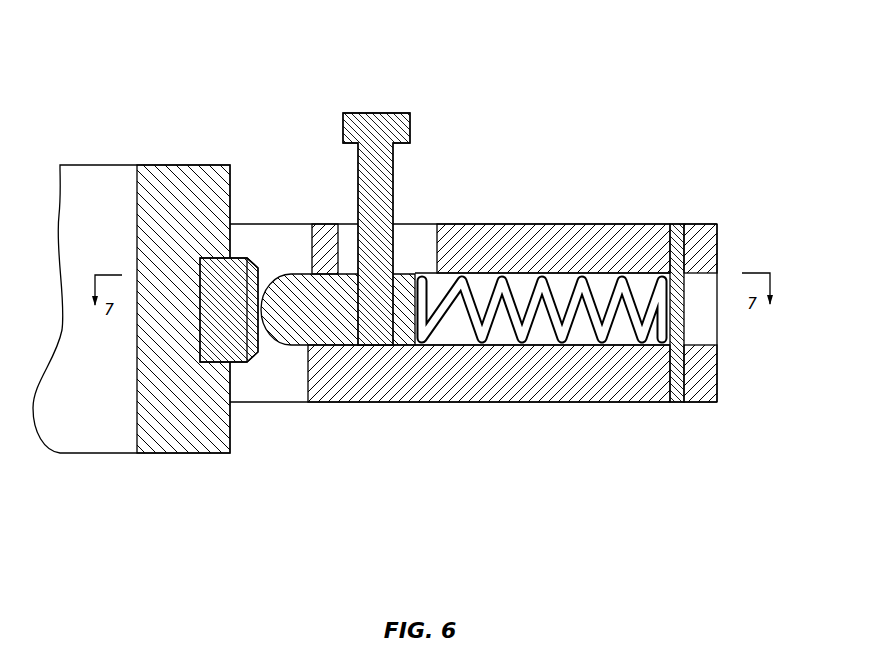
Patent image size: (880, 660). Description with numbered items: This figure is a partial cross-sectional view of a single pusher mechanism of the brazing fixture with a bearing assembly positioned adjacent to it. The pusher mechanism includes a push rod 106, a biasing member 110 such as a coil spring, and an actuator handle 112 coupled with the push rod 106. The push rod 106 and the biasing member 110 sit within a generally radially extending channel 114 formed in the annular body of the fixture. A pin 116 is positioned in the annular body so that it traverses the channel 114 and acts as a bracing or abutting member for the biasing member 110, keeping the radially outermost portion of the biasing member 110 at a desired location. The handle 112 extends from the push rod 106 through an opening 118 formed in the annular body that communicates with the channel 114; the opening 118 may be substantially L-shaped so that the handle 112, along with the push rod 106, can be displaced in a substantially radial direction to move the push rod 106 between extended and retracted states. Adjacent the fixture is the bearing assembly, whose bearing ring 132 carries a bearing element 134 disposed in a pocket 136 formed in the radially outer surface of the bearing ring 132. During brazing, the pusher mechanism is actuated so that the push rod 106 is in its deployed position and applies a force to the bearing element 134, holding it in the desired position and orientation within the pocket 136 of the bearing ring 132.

The push rod 106 is at (290, 347).
The biasing member 110 is at (597, 290).
The actuator handle 112 is at (355, 162).
The channel 114 is at (503, 357).
The pin 116 is at (686, 303).
The opening 118 is at (416, 232).
The bearing ring 132 is at (147, 453).
The bearing element 134 is at (238, 257).
The pocket 136 is at (208, 366).